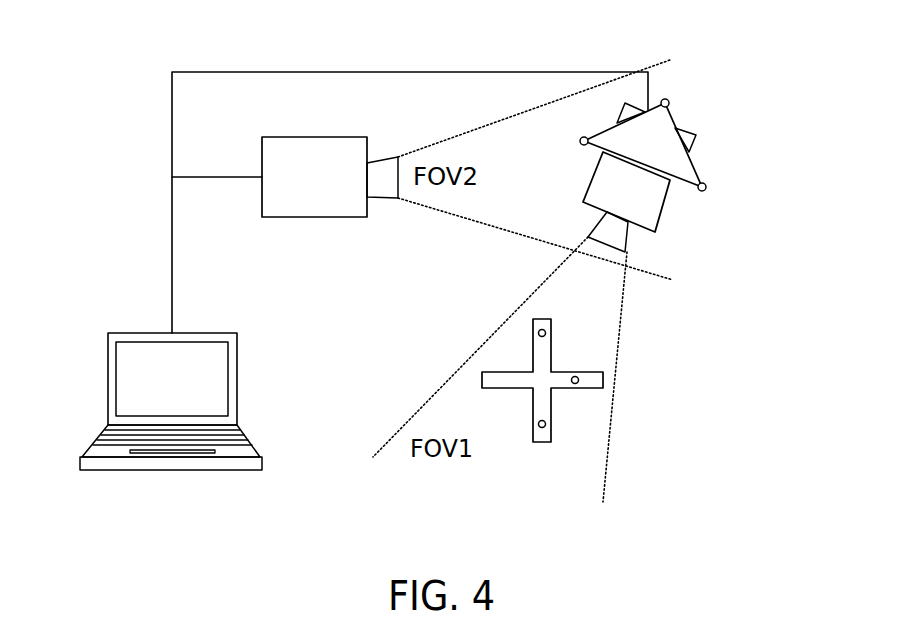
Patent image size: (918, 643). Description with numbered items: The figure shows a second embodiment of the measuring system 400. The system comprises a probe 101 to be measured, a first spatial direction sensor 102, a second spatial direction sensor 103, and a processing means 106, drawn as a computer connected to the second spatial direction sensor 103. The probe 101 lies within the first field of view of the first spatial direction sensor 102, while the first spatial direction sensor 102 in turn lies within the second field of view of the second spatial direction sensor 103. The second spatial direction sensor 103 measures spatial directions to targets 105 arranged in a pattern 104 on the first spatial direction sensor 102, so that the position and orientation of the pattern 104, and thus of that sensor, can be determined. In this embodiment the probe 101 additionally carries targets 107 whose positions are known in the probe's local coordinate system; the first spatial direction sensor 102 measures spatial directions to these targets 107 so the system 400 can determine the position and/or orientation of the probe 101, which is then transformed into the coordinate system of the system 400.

The system 400 is at (190, 42).
The probe 101 is at (494, 376).
The first spatial direction sensor 102 is at (640, 212).
The second spatial direction sensor 103 is at (315, 197).
The pattern 104 is at (660, 160).
The targets 105 is at (580, 147).
The processing means 106 is at (217, 370).
The targets 107 is at (546, 424).